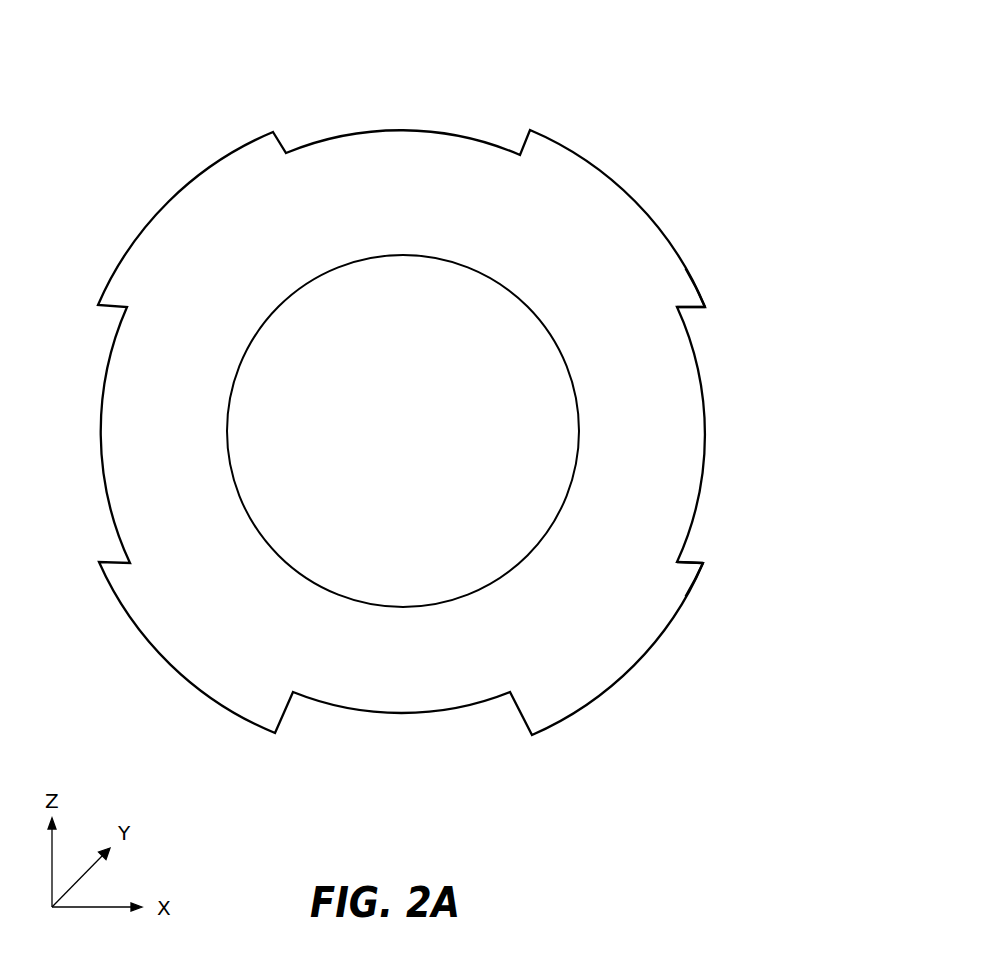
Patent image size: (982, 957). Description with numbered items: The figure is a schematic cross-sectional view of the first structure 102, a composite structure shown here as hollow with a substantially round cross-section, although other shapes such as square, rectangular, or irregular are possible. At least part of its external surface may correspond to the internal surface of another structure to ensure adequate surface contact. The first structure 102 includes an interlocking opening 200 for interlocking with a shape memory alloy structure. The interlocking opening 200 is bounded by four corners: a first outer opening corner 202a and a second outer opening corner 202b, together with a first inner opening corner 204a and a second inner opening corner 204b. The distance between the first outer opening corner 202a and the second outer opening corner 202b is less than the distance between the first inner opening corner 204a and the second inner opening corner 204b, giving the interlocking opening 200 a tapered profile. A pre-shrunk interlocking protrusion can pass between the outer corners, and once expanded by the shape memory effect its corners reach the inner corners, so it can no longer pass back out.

The first structure 102 is at (466, 374).
The interlocking opening 200 is at (705, 355).
The first outer opening corner 202a is at (707, 308).
The second outer opening corner 202b is at (703, 563).
The first inner opening corner 204a is at (677, 307).
The second inner opening corner 204b is at (677, 562).